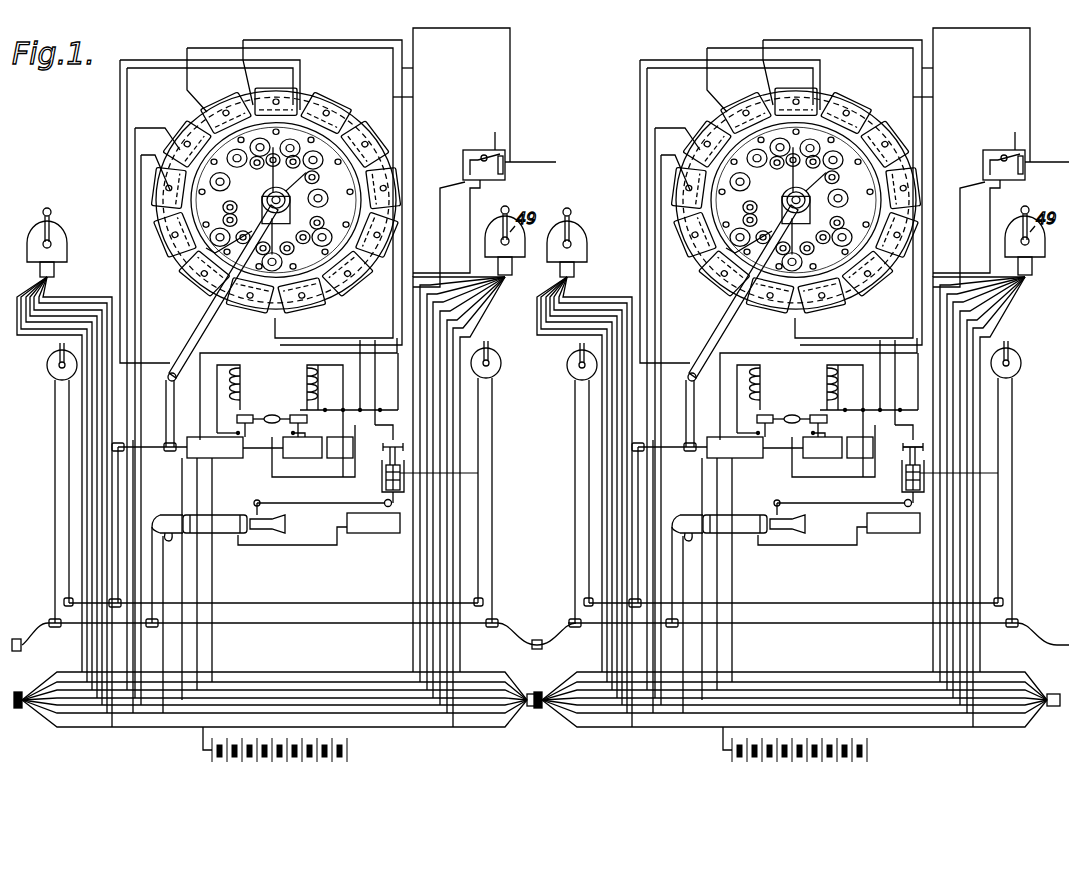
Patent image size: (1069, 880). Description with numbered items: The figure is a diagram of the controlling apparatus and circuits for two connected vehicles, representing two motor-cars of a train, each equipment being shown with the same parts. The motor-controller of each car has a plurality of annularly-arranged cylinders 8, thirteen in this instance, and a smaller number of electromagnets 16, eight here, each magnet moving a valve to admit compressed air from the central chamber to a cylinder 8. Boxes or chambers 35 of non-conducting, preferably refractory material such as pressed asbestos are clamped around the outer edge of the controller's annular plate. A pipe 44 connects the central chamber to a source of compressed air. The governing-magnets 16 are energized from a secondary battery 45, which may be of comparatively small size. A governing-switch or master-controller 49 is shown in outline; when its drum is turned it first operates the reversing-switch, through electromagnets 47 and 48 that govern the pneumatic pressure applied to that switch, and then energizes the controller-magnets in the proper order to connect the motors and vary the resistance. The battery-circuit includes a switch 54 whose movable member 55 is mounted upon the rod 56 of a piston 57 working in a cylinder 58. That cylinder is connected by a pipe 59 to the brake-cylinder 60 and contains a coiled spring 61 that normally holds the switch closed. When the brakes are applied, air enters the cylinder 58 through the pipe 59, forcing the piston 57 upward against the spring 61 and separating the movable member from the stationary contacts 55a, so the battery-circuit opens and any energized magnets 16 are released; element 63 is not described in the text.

The cylinders 8 is at (320, 190).
The electromagnet 16 is at (222, 192).
The boxes or chambers 35 is at (368, 132).
The pipe 44 is at (204, 318).
The secondary battery 45 is at (275, 757).
The electromagnet 47 is at (241, 399).
The electromagnet 48 is at (302, 388).
The governing-switch or master-controller 49 is at (28, 245).
The switch 54 is at (386, 475).
The movable member 55 is at (373, 446).
The stationary contacts 55a is at (930, 444).
The rod 56 is at (389, 457).
The piston 57 is at (400, 501).
The cylinder 58 is at (382, 489).
The pipe 59 is at (287, 524).
The brake-cylinder 60 is at (272, 532).
The coiled spring 61 is at (440, 483).
The switch box 63 is at (483, 155).